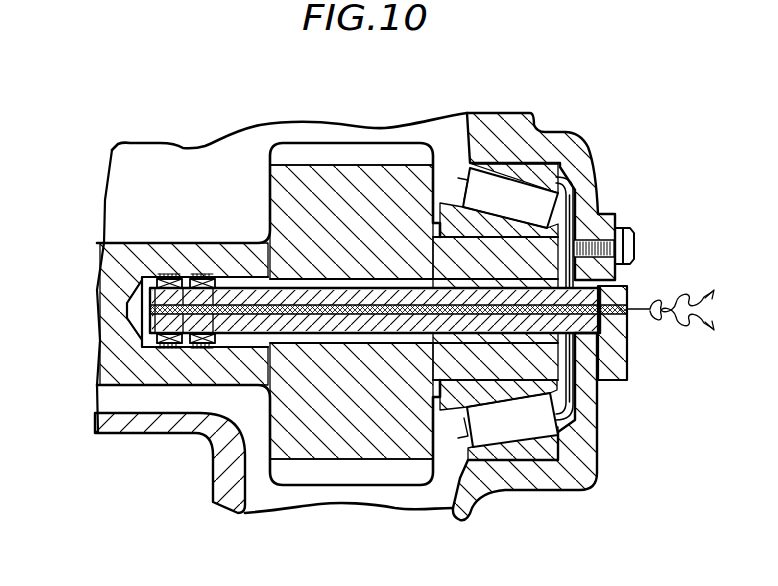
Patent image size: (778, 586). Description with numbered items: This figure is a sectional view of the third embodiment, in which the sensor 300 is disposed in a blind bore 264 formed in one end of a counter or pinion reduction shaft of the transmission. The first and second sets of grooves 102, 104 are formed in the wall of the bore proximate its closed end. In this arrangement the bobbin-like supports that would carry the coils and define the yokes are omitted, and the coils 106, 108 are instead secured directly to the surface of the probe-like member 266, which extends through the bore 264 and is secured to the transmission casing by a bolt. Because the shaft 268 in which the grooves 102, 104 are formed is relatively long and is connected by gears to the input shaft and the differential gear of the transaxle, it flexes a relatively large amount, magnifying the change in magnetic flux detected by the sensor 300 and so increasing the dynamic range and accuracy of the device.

The first set of grooves 102 is at (166, 347).
The second set of grooves 104 is at (200, 348).
The coil 106 is at (142, 277).
The coil 108 is at (216, 286).
The blind bore 264 is at (283, 280).
The probe-like member 266 is at (178, 433).
The shaft 268 is at (108, 304).
The sensor 300 is at (178, 270).